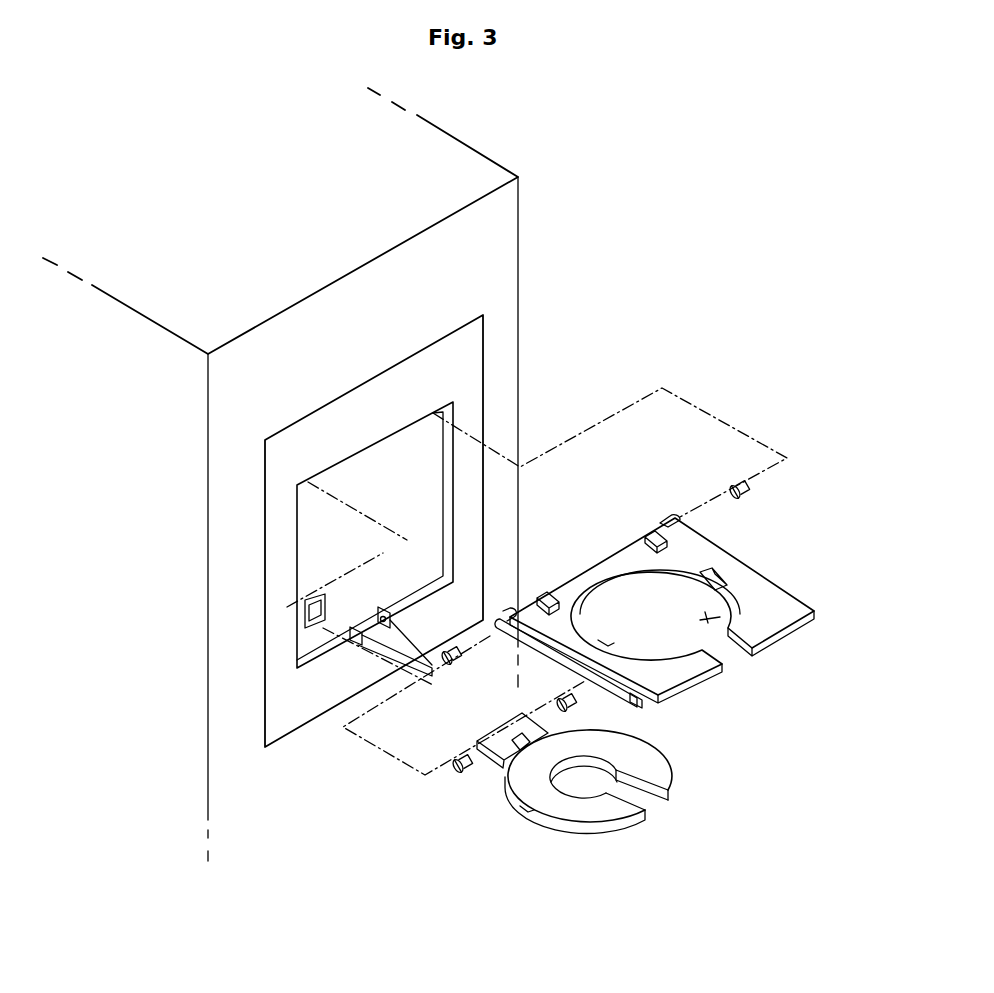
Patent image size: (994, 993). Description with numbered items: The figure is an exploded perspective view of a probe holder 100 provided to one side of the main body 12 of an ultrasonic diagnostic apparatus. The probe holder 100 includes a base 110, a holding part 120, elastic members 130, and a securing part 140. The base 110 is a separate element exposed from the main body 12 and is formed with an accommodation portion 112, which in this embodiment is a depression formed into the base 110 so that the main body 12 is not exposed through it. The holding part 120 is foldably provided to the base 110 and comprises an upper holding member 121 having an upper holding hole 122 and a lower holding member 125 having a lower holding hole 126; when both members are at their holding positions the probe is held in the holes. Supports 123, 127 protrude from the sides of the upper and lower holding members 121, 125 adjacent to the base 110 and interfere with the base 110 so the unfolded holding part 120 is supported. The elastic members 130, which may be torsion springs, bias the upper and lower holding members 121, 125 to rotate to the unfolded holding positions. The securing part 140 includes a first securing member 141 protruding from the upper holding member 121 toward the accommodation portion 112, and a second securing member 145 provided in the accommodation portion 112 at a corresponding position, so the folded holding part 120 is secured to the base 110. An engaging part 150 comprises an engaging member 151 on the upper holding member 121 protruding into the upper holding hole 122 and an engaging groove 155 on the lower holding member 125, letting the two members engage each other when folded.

The main body 12 is at (455, 255).
The probe holder 100 is at (359, 485).
The base 110 is at (282, 461).
The accommodation portion 112 is at (320, 537).
The securing part 140 is at (653, 350).
The second securing member 145 is at (327, 607).
The first securing member 141 is at (620, 688).
The holding part 120 is at (690, 636).
The upper holding member 121 is at (776, 612).
The upper holding hole 122 is at (712, 618).
The support 123 is at (667, 548).
The elastic member 130 is at (738, 485).
The engaging part 150 is at (596, 807).
The lower holding member 125 is at (612, 818).
The lower holding hole 126 is at (618, 784).
The support 127 is at (505, 748).
The engaging groove 155 is at (530, 812).
The engaging member 151 is at (604, 640).